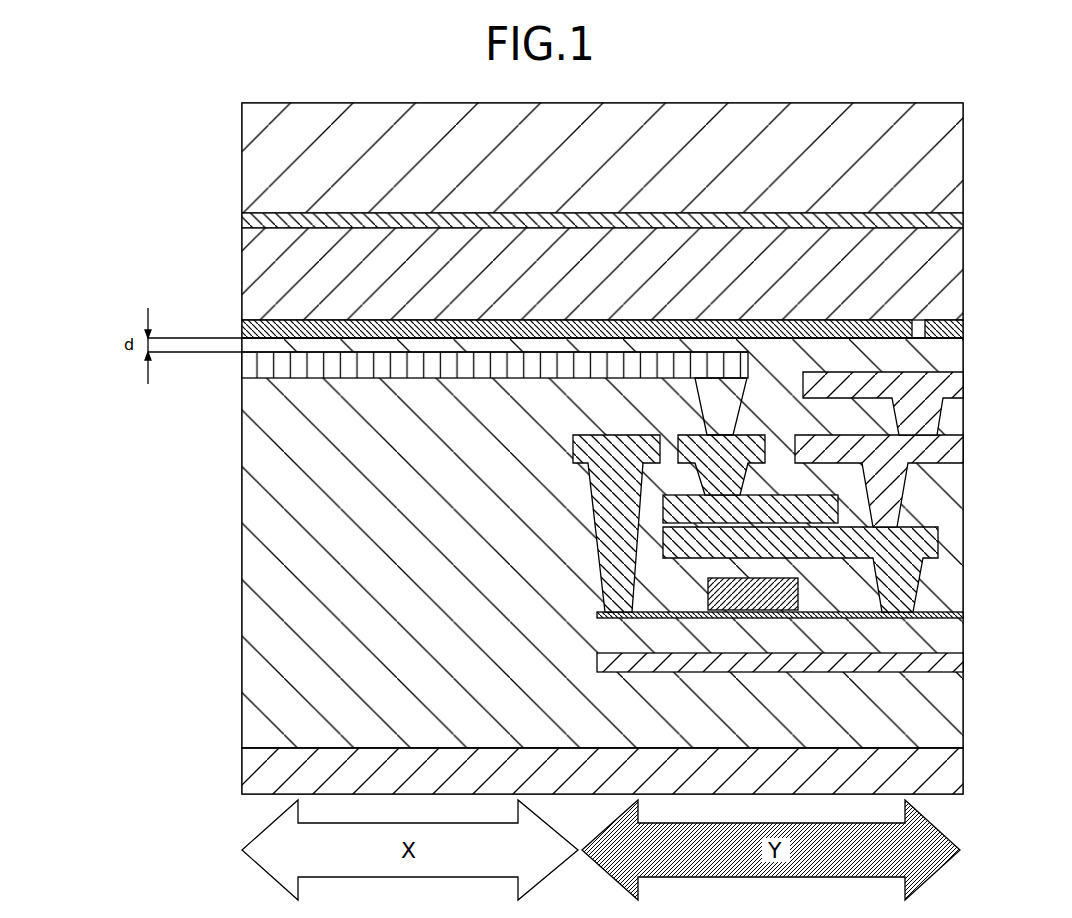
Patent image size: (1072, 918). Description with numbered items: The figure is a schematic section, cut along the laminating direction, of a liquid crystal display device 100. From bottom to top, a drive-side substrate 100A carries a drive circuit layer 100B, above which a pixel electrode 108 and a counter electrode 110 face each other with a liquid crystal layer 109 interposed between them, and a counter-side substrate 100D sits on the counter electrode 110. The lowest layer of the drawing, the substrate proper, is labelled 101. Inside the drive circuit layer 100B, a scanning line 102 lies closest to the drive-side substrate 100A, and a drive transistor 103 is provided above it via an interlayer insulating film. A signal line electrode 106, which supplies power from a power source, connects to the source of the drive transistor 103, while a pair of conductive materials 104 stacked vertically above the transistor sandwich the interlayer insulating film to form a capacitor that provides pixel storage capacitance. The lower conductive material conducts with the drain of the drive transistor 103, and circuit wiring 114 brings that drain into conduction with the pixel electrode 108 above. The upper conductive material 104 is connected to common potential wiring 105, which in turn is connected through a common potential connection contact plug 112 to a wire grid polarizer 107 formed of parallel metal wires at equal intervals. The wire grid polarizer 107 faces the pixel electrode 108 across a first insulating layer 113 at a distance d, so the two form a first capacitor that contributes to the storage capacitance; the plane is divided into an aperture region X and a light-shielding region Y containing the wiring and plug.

The liquid crystal display device 100 is at (993, 59).
The drive-side substrate 100A is at (113, 748).
The drive circuit layer 100B is at (113, 338).
The counter-side substrate 100D is at (113, 103).
The substrate 101 is at (933, 706).
The scanning line 102 is at (950, 668).
The drive transistor 103 is at (800, 597).
The pair of conductive materials 104 is at (915, 540).
The common potential wiring 105 is at (840, 495).
The signal line electrode 106 is at (580, 442).
The wire grid polarizer 107 is at (248, 365).
The pixel electrode 108 is at (953, 329).
The liquid crystal layer 109 is at (947, 274).
The counter electrode 110 is at (953, 227).
The common potential connection contact plug 112 is at (922, 463).
The first insulating layer 113 is at (248, 343).
The circuit wiring 114 is at (963, 389).